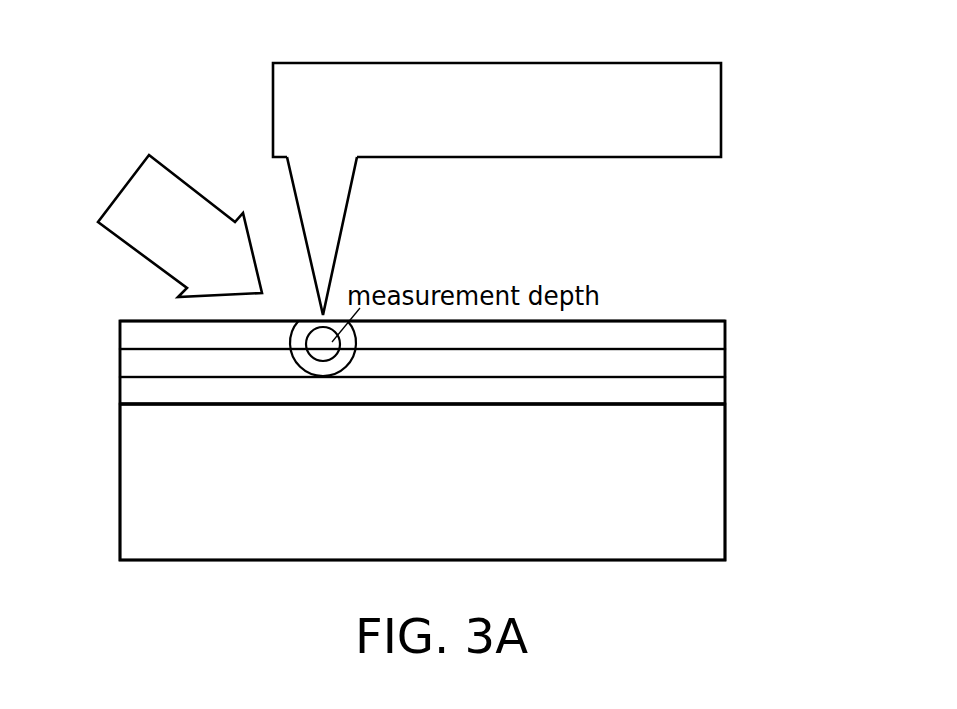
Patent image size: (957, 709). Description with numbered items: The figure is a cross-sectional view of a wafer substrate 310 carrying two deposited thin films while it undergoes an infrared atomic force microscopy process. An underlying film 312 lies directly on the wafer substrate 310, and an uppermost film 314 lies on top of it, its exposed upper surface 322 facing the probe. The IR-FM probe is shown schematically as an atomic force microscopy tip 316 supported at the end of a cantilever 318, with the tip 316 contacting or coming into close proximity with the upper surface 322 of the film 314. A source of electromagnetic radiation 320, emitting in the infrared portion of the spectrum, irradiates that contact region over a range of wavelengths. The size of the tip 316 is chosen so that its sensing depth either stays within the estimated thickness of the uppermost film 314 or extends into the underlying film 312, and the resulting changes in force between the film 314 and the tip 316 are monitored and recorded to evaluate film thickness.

The cantilever 318 is at (710, 113).
The atomic force microscopy tip 316 is at (333, 212).
The source of electromagnetic radiation 320 is at (152, 263).
The upper surface 322 is at (658, 319).
The uppermost film 314 is at (708, 337).
The underlying film 312 is at (708, 365).
The wafer substrate 310 is at (708, 482).